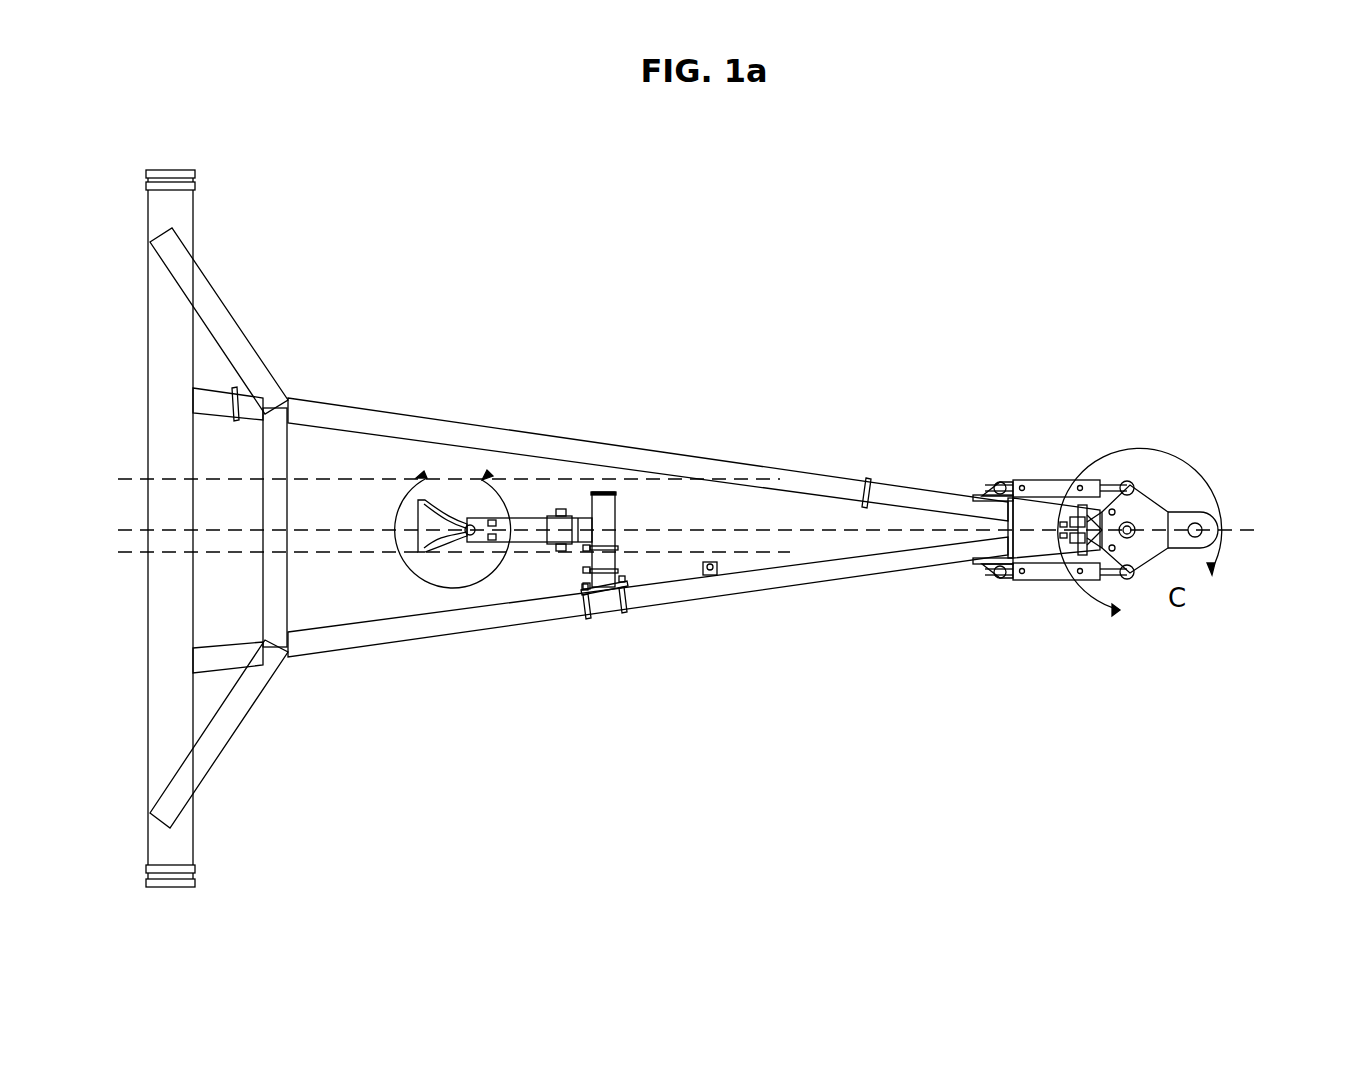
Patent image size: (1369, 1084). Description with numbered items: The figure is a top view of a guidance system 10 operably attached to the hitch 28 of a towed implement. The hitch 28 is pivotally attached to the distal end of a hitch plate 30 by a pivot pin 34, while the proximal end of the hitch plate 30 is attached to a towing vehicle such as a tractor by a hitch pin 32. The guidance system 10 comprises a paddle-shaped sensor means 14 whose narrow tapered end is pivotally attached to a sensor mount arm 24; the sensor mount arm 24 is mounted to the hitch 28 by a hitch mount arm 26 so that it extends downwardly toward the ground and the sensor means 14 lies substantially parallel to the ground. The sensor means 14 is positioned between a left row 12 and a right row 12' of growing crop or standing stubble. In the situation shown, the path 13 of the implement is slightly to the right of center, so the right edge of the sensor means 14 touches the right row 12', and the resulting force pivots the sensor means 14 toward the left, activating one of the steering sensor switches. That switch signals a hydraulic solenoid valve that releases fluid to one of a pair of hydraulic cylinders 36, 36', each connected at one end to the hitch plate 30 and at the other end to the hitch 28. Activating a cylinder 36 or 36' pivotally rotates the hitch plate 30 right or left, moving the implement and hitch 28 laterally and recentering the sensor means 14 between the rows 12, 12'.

The guidance system 10 is at (529, 551).
The left row of crop or stubble 12 is at (648, 399).
The right row of crop or stubble 12' is at (648, 641).
The path 13 is at (368, 528).
The sensor means 14 is at (453, 505).
The sensor mount arm 24 is at (528, 525).
The hitch mount arm 26 is at (600, 512).
The hitch 28 is at (808, 480).
The hitch plate 30 is at (1143, 502).
The hitch pin 32 is at (1203, 530).
The pivot pin 34 is at (1133, 527).
The hydraulic cylinder 36 is at (1053, 660).
The hydraulic cylinder 36' is at (1053, 393).